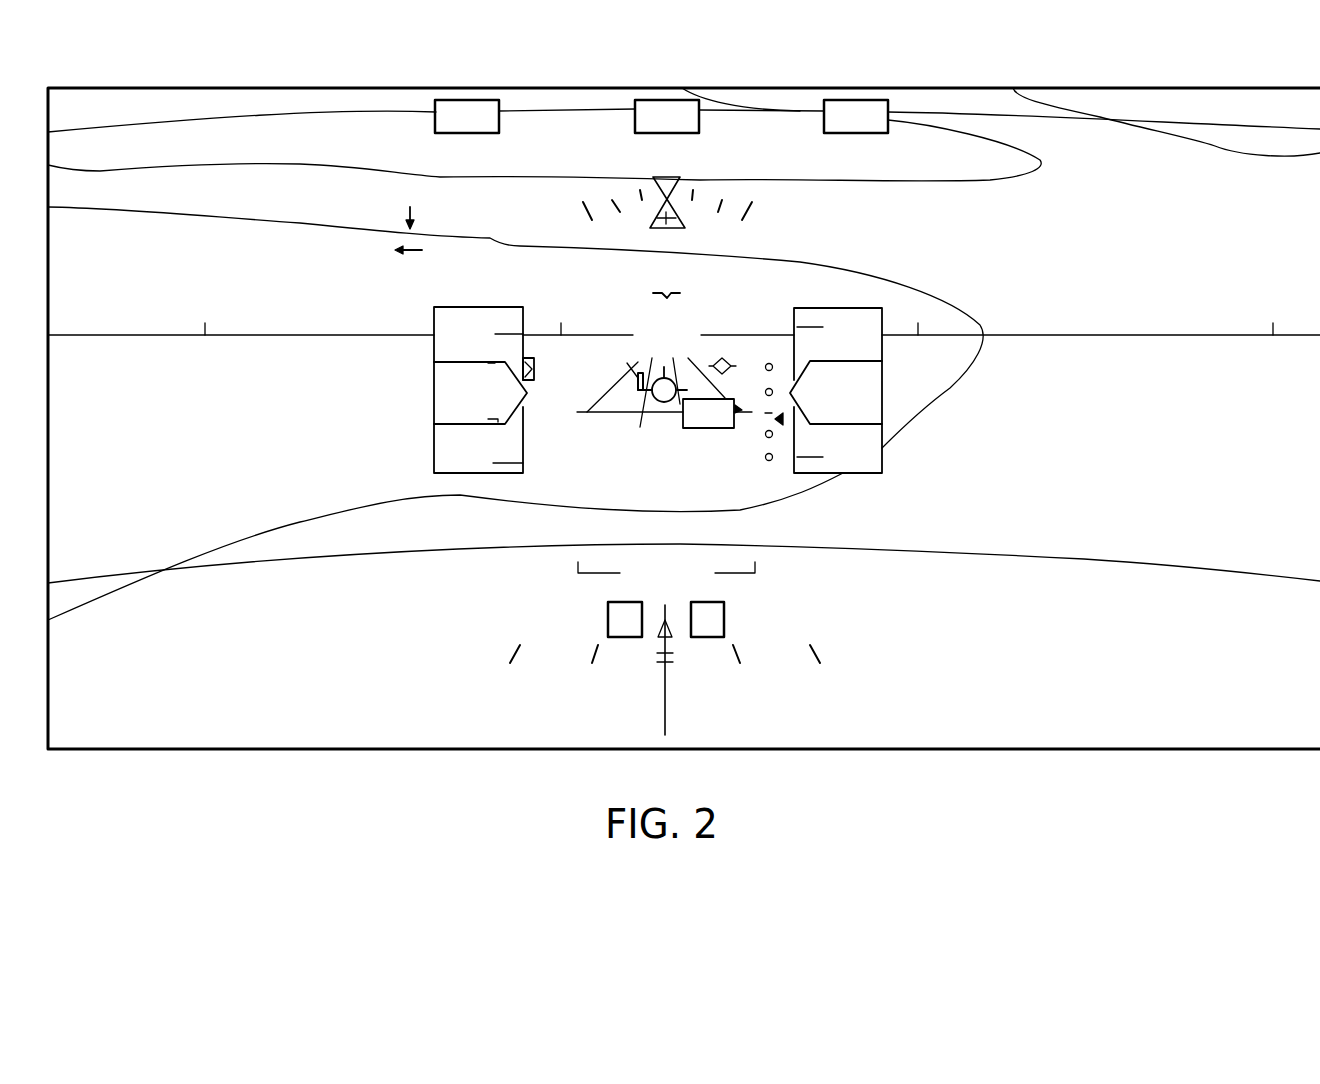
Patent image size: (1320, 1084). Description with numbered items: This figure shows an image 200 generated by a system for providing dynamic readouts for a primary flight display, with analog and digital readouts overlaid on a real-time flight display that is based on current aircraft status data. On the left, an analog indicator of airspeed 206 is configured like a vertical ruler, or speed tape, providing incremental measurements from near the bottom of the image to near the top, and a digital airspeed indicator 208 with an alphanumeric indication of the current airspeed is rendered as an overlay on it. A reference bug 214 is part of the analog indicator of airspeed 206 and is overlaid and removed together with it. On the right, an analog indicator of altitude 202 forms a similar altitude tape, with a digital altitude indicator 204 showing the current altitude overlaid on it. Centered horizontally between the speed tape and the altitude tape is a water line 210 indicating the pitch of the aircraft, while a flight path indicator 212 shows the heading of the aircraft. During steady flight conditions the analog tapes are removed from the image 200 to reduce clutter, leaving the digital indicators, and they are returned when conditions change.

The image 200 is at (1120, 88).
The analog indicator of altitude 202 is at (840, 308).
The digital altitude indicator 204 is at (883, 403).
The analog indicator of airspeed 206 is at (434, 318).
The digital airspeed indicator 208 is at (434, 393).
The water line 210 is at (680, 293).
The flight path indicator 212 is at (664, 402).
The reference bug 214 is at (535, 368).